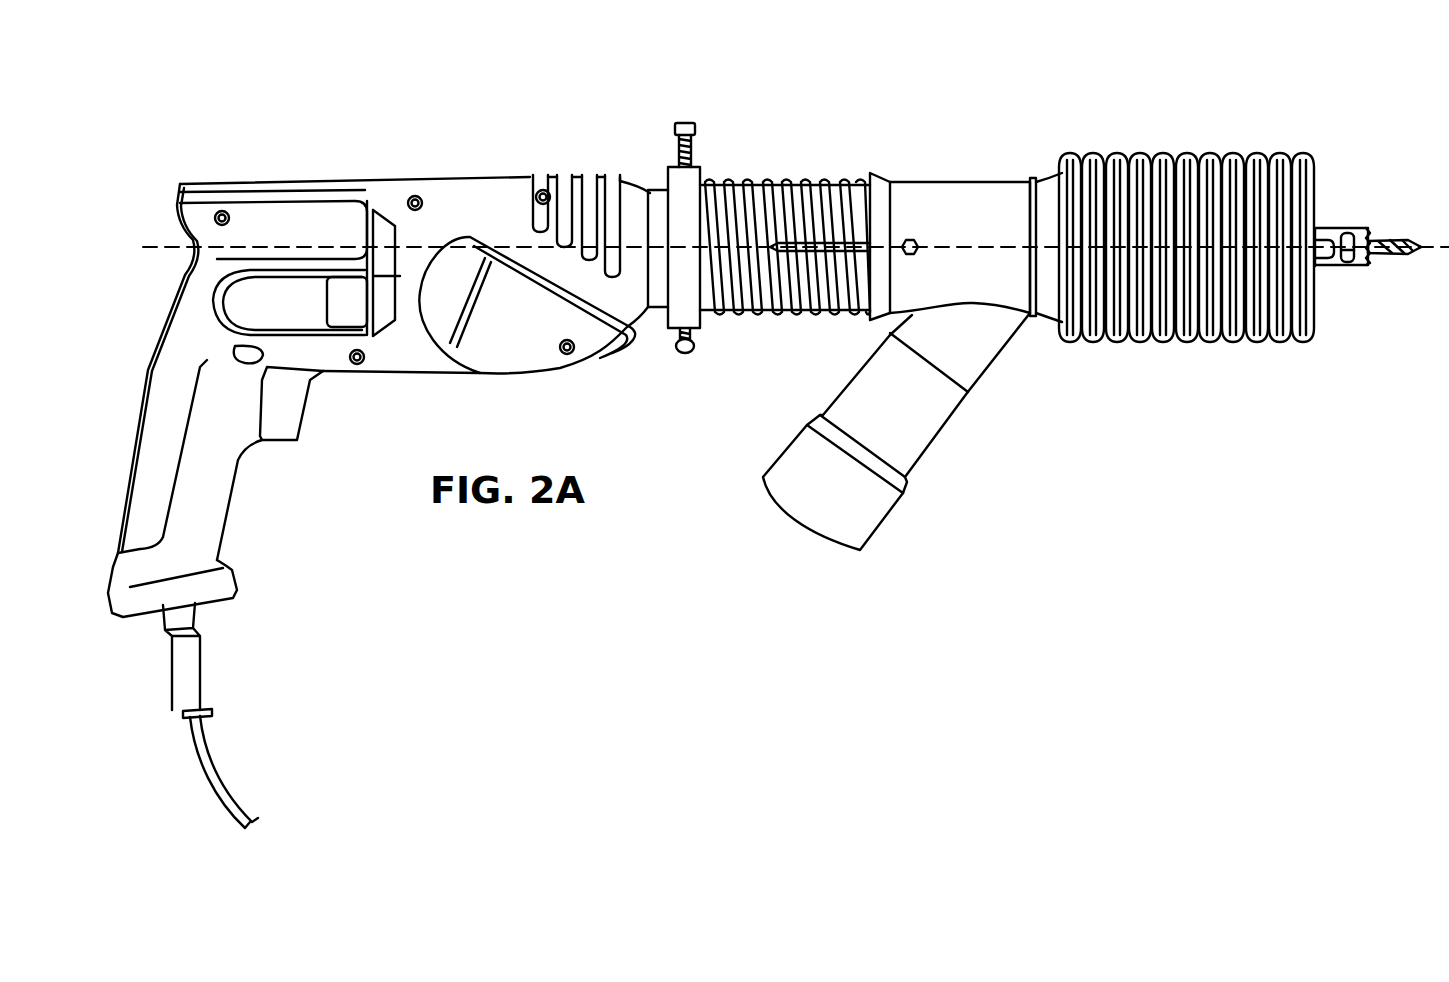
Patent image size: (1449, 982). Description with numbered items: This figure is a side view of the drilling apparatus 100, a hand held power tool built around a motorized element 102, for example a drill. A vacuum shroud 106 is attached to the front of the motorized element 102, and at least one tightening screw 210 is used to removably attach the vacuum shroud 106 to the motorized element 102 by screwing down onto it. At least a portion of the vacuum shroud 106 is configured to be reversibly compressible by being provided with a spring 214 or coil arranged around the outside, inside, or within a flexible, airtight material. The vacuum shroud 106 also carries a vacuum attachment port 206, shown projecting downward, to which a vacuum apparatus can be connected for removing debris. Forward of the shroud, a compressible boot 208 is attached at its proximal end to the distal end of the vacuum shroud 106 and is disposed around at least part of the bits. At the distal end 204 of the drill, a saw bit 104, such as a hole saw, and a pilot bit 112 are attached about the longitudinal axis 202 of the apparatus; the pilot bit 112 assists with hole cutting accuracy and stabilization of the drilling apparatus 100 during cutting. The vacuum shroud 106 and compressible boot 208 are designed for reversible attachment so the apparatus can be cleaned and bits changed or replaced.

The drilling apparatus 100 is at (913, 97).
The motorized element 102 is at (323, 180).
The saw bit 104 is at (1340, 228).
The vacuum shroud 106 is at (980, 200).
The pilot bit 112 is at (1400, 239).
The longitudinal axis 202 is at (1430, 252).
The distal end 204 is at (1343, 290).
The vacuum attachment port 206 is at (937, 433).
The compressible boot 208 is at (1135, 155).
The tightening screws 210 is at (675, 129).
The spring 214 is at (797, 183).